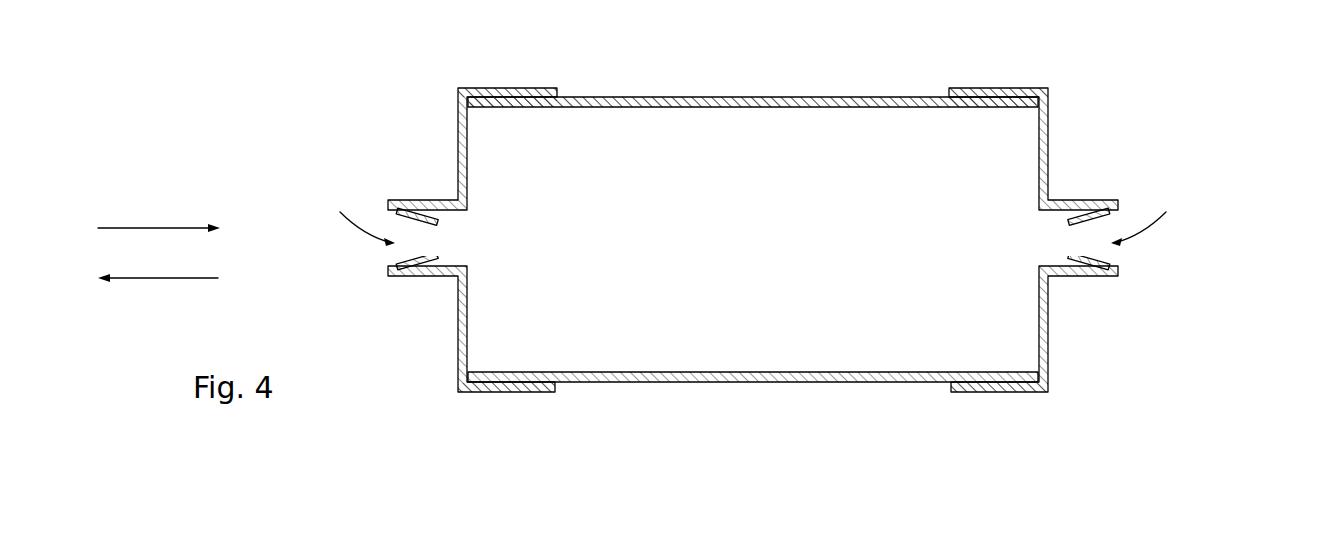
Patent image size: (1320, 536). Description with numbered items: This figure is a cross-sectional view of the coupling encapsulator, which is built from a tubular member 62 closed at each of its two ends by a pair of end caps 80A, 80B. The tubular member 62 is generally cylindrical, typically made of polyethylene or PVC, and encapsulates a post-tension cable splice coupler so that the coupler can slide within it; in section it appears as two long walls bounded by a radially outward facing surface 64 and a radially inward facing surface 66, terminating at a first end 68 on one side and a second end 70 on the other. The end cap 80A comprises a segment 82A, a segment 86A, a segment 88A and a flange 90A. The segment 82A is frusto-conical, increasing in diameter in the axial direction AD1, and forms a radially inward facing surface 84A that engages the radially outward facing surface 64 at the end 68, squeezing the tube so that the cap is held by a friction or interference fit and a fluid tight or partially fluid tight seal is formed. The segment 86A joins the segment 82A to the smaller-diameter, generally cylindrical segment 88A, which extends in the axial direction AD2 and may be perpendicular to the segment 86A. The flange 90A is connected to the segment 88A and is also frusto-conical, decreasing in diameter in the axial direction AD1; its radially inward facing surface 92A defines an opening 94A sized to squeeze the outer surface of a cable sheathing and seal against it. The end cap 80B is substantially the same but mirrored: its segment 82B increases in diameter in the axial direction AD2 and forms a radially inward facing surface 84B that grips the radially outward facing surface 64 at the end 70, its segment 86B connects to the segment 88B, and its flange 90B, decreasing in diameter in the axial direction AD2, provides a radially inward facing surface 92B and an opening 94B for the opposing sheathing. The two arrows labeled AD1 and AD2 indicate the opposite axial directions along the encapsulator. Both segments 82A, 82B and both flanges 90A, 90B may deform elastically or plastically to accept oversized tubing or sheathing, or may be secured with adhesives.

The tubular member 62 is at (753, 97).
The radially outward facing surface 64 is at (673, 97).
The radially inward facing surface 66 is at (665, 372).
The end 68 is at (458, 378).
The end 70 is at (1050, 378).
The end cap 80A is at (517, 392).
The end cap 80B is at (982, 392).
The segment 82A is at (505, 88).
The segment 82B is at (995, 88).
The radially inward facing surface 84A is at (552, 107).
The radially inward facing surface 84B is at (952, 107).
The segment 86A is at (458, 137).
The segment 86B is at (1048, 137).
The segment 88A is at (417, 280).
The segment 88B is at (1087, 280).
The flange 90A is at (410, 222).
The flange 90B is at (1095, 222).
The radially inward facing surface 92A is at (402, 263).
The radially inward facing surface 92B is at (1103, 263).
The opening 94A is at (340, 212).
The opening 94B is at (1166, 212).
The axial direction AD1 is at (135, 228).
The axial direction AD2 is at (157, 278).